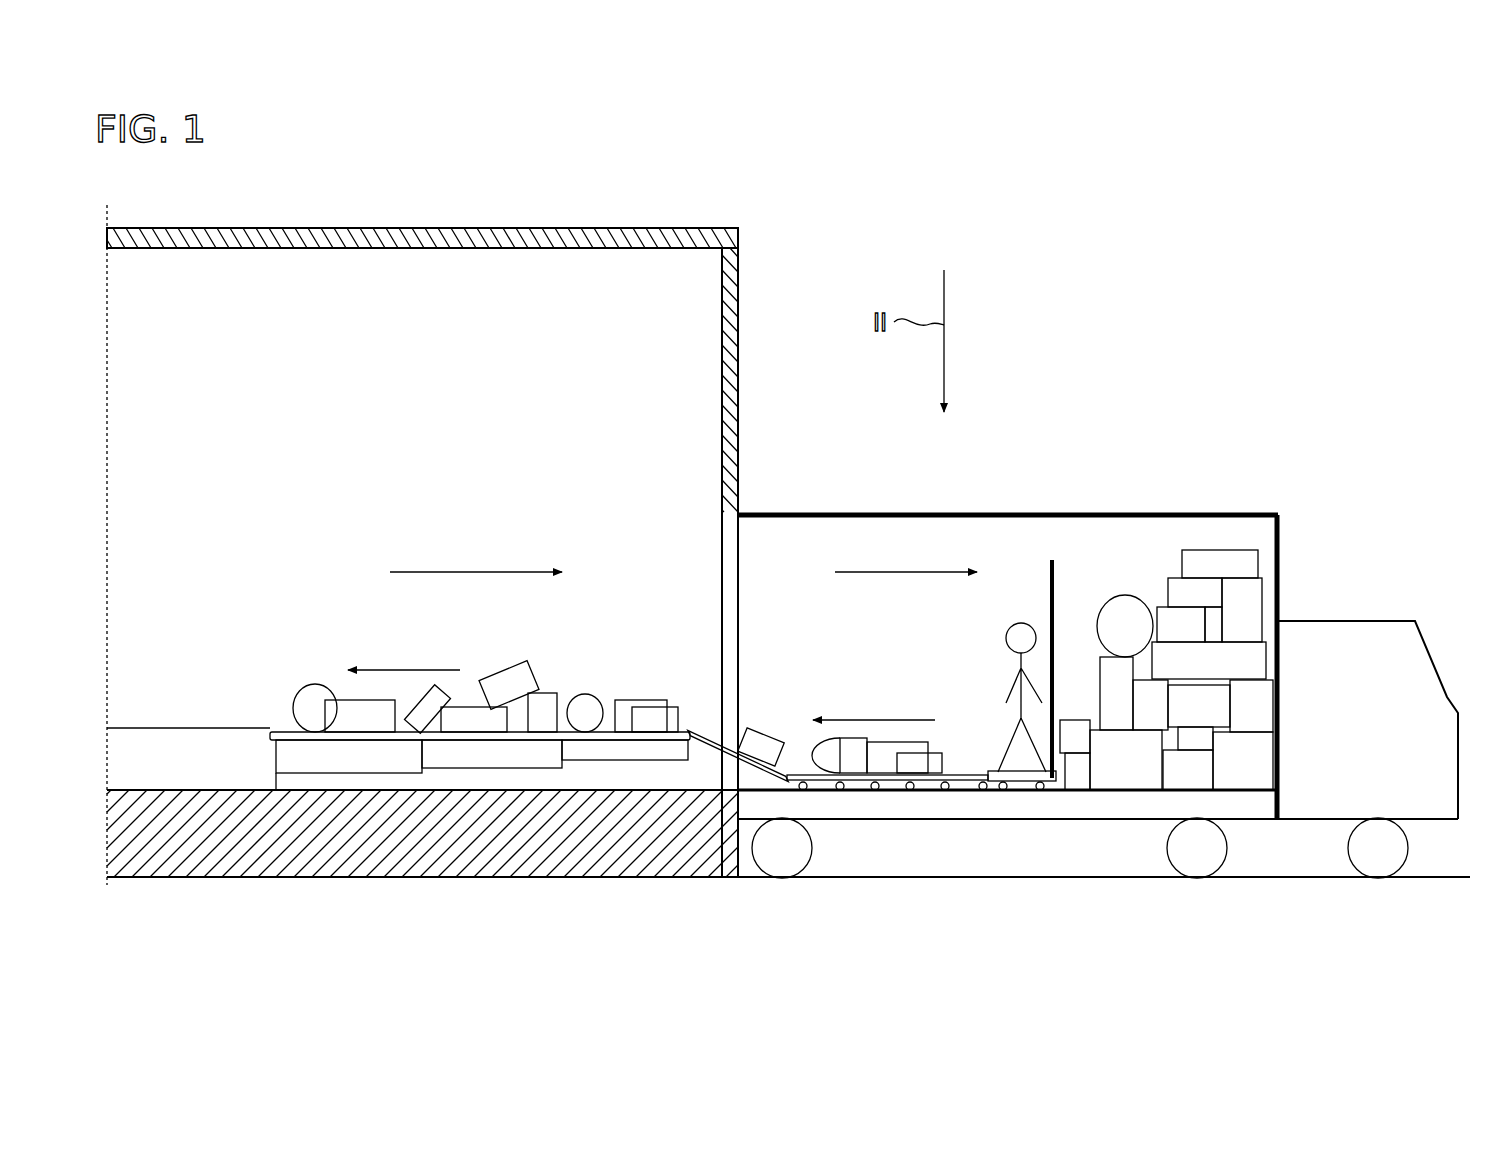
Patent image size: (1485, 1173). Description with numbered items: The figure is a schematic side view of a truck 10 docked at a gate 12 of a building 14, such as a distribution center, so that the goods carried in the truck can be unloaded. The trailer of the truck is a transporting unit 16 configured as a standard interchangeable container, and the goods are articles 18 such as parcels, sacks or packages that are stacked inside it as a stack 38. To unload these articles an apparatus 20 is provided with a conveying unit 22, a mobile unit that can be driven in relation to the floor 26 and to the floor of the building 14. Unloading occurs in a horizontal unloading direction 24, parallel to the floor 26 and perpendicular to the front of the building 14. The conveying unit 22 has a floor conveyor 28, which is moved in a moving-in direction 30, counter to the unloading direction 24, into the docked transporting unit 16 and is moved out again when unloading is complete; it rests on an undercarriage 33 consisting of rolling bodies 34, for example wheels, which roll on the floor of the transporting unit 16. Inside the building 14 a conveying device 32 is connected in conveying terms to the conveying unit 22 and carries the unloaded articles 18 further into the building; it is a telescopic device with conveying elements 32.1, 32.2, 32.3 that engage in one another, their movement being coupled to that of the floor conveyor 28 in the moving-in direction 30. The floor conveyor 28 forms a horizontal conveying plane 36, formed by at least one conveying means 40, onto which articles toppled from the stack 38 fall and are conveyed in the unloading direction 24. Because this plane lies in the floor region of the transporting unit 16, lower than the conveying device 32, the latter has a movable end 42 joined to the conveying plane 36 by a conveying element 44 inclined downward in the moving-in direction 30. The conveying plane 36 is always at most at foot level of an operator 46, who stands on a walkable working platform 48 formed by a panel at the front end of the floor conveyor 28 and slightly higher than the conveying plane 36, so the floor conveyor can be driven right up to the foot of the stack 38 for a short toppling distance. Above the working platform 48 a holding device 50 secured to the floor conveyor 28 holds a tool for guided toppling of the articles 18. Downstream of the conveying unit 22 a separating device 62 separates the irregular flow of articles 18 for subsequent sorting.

The truck 10 is at (1378, 514).
The gate 12 is at (747, 507).
The building 14 is at (732, 300).
The transporting unit 16 is at (1010, 512).
The articles 18 is at (362, 740).
The apparatus 20 is at (1060, 592).
The conveying unit 22 is at (1023, 819).
The unloading direction 24 is at (405, 668).
The floor 26 is at (1148, 878).
The floor conveyor 28 is at (916, 796).
The moving-in direction 30 is at (465, 570).
The conveying device 32 is at (398, 801).
The conveying element 32.1 is at (330, 760).
The conveying element 32.2 is at (495, 750).
The conveying element 32.3 is at (625, 750).
The undercarriage 33 is at (1045, 797).
The rolling bodies 34 is at (915, 819).
The conveying plane 36 is at (962, 762).
The stack of articles 38 is at (1204, 546).
The conveying means 40 is at (848, 778).
The movable end 42 is at (690, 745).
The conveying element 44 is at (757, 765).
The operator 46 is at (1012, 668).
The working platform 48 is at (1020, 782).
The holding device 50 is at (1050, 597).
The separating device 62 is at (187, 740).